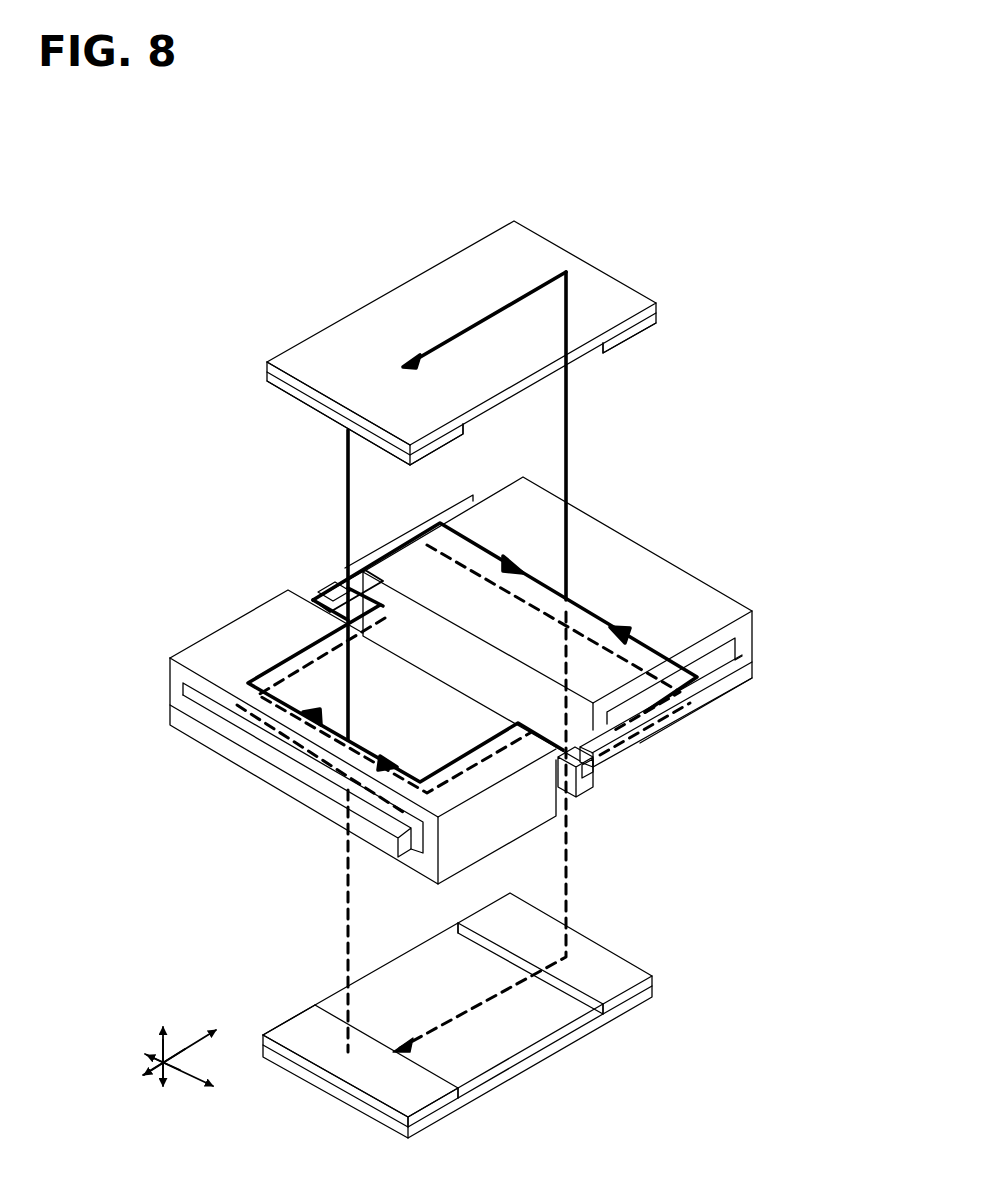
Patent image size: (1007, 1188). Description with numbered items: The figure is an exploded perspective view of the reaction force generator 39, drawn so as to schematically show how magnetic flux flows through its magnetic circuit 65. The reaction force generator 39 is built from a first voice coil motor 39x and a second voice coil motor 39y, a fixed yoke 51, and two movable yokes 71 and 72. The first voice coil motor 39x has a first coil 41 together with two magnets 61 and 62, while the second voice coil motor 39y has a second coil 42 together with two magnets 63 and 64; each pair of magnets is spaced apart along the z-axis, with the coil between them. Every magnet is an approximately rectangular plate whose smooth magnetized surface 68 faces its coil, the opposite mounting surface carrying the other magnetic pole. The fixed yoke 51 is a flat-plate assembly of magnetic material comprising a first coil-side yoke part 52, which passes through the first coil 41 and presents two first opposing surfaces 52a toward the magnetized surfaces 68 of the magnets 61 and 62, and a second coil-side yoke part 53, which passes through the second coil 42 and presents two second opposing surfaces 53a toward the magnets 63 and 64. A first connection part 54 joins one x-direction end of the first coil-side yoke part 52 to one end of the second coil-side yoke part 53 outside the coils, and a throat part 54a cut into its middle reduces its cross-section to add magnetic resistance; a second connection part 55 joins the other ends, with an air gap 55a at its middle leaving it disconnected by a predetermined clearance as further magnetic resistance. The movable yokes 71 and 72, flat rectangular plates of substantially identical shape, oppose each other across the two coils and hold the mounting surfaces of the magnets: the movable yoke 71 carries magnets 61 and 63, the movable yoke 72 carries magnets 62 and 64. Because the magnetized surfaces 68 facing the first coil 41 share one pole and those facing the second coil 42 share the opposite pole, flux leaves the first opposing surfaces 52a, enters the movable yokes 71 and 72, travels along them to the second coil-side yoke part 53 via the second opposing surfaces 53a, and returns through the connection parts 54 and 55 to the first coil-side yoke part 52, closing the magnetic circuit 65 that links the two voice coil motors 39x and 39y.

The reaction force generator 39 is at (614, 221).
The first voice coil motor 39x is at (727, 568).
The second voice coil motor 39y is at (211, 605).
The first coil 41 is at (612, 528).
The second coil 42 is at (178, 640).
The fixed yoke 51 is at (183, 725).
The first coil-side yoke part 52 is at (740, 675).
The first opposing surface 52a is at (707, 677).
The second coil-side yoke part 53 is at (305, 793).
The second opposing surface 53a is at (255, 742).
The first connection part 54 is at (335, 577).
The throat part 54a is at (317, 580).
The second connection part 55 is at (585, 770).
The air gap 55a is at (568, 790).
The magnet 61 is at (650, 320).
The magnet 62 is at (632, 960).
The magnet 63 is at (290, 389).
The magnet 64 is at (312, 1023).
The magnetic circuit 65 is at (406, 298).
The magnetized surface 68 is at (313, 417).
The movable yoke 71 is at (483, 260).
The movable yoke 72 is at (550, 1023).